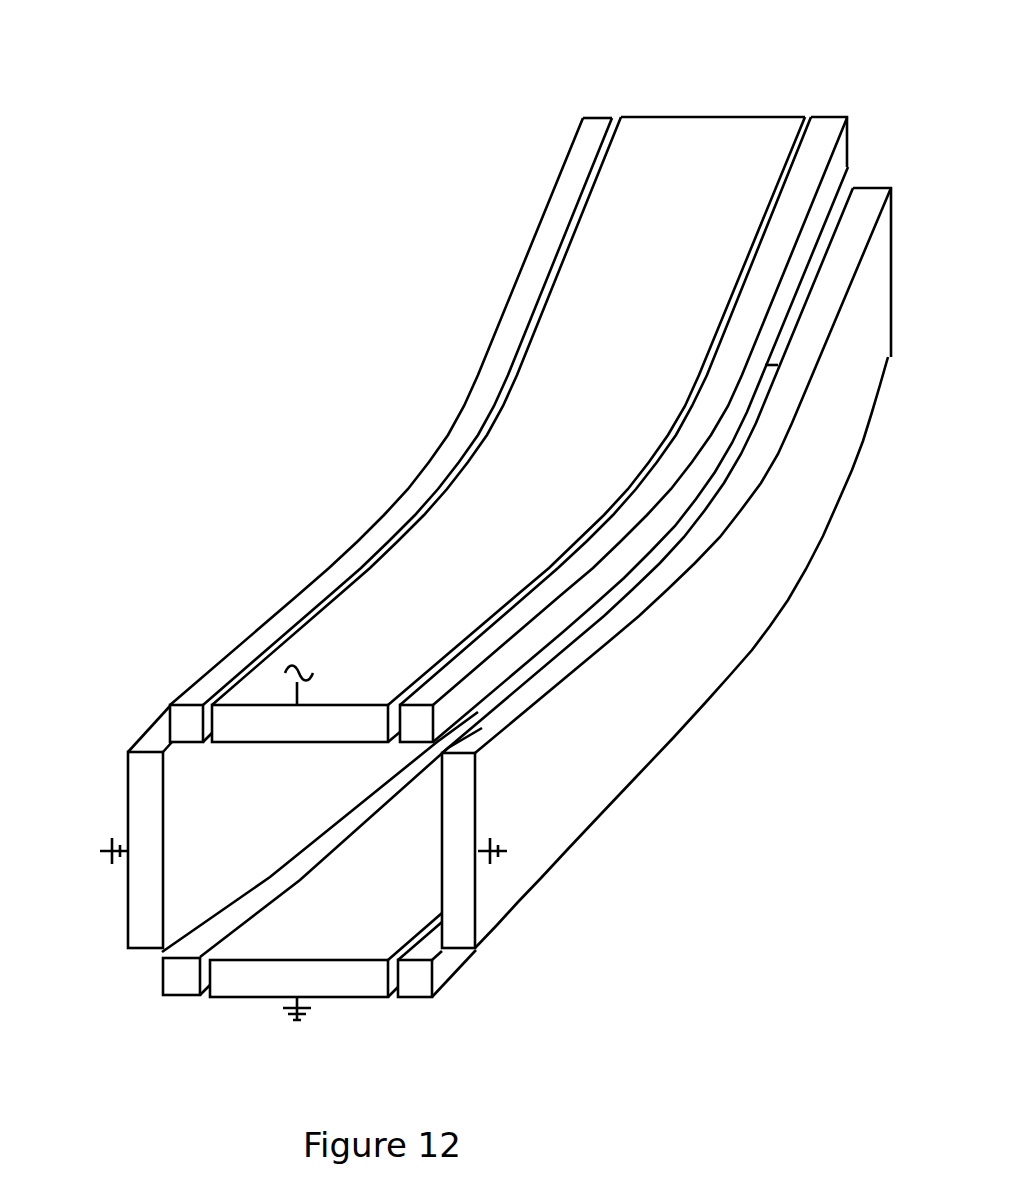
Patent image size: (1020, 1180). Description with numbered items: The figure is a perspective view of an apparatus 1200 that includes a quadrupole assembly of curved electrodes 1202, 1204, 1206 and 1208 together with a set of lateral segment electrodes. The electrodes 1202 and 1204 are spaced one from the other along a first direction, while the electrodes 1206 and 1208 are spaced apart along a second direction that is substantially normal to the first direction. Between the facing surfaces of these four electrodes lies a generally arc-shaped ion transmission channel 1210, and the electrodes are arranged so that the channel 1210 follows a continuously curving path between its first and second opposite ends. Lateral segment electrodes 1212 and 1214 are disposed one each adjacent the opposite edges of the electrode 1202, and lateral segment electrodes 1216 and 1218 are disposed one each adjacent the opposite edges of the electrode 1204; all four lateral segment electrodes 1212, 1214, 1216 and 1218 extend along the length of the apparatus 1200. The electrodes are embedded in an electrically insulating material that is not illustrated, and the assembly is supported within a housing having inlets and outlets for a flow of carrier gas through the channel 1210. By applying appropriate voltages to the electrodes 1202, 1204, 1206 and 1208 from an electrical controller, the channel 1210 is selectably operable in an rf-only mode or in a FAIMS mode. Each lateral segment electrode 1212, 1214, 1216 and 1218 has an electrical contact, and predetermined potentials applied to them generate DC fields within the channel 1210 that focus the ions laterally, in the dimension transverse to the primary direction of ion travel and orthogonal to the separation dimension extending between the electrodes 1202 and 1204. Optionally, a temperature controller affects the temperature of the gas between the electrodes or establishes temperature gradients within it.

The apparatus 1200 is at (232, 532).
The curved electrode 1202 is at (545, 435).
The curved electrode 1204 is at (370, 982).
The curved electrode 1206 is at (560, 780).
The curved electrode 1208 is at (150, 782).
The ion transmission channel 1210 is at (215, 872).
The lateral segment electrode 1212 is at (572, 178).
The lateral segment electrode 1214 is at (838, 115).
The lateral segment electrode 1216 is at (188, 1000).
The lateral segment electrode 1218 is at (437, 985).